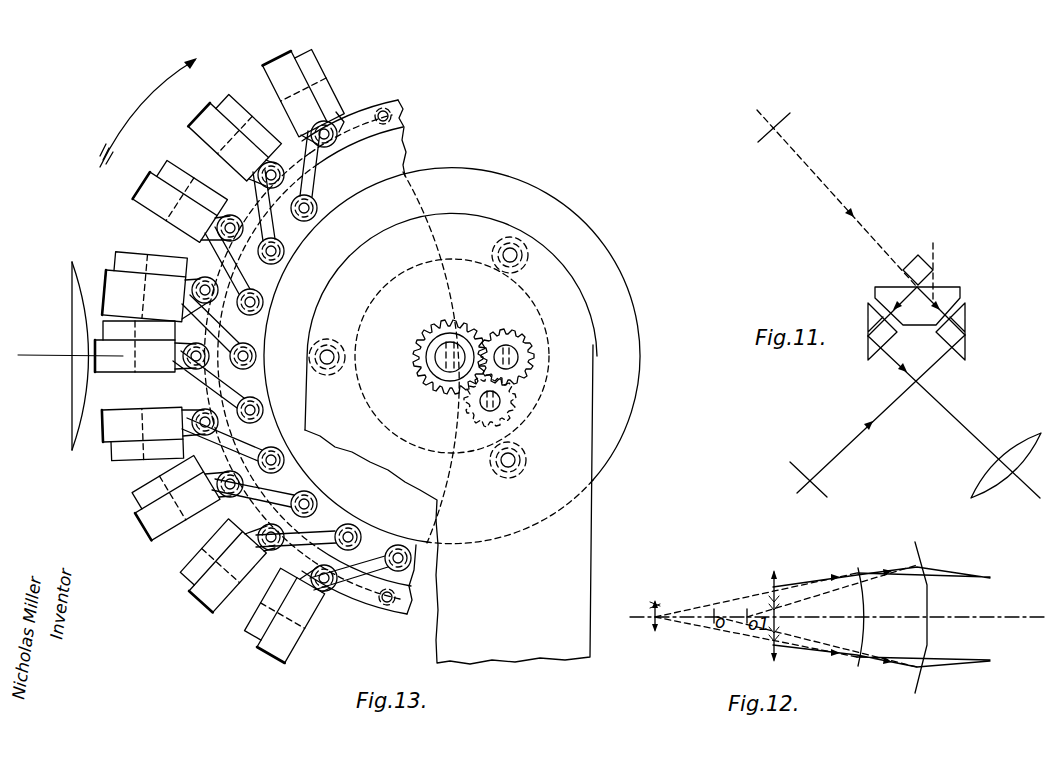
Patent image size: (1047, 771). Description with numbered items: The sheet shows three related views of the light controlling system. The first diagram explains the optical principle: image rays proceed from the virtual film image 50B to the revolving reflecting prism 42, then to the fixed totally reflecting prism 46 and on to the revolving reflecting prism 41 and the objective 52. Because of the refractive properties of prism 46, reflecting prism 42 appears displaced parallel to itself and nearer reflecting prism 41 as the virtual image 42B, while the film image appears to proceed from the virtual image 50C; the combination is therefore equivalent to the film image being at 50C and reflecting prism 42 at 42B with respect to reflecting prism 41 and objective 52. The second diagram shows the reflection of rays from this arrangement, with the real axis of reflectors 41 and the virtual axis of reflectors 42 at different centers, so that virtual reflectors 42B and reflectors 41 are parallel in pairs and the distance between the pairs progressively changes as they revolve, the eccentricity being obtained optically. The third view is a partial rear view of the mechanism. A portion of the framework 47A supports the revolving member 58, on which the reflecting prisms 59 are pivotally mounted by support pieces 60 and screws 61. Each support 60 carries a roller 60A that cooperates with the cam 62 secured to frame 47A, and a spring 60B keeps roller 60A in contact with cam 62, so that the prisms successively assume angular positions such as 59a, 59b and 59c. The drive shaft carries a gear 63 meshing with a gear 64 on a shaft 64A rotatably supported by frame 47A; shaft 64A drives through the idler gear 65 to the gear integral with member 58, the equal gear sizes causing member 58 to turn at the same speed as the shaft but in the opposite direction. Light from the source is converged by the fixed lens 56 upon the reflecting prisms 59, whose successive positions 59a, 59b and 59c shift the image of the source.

In FIG. 11, the reflecting prism 41 is at (868, 319).
In FIG. 12, the reflecting prism 41 is at (866, 614).
In FIG. 11, the reflecting prism 42 is at (967, 319).
In FIG. 11, the virtual image of reflecting prism 42B is at (934, 255).
In FIG. 12, the virtual image of reflecting prism 42B is at (929, 606).
In FIG. 11, the fixed reflecting prism 46 is at (947, 292).
In FIG. 13, the frame 47A is at (586, 544).
In FIG. 11, the virtual image of the film image 50B is at (808, 484).
In FIG. 11, the virtual image of 50B 50C is at (781, 117).
In FIG. 12, the virtual image of 50B 50C is at (773, 622).
In FIG. 11, the objective 52 is at (996, 484).
In FIG. 13, the fixed lens 56 is at (76, 421).
In FIG. 13, the revolving member 58 is at (396, 153).
In FIG. 13, the reflecting prisms 59 is at (235, 80).
In FIG. 13, the angular position of light controlling reflector 59a is at (108, 460).
In FIG. 13, the angular position of light controlling reflector 59b is at (110, 382).
In FIG. 13, the angular position of light controlling reflector 59c is at (122, 259).
In FIG. 13, the support piece 60 is at (160, 187).
In FIG. 13, the roller 60A is at (312, 220).
In FIG. 13, the spring 60B is at (348, 140).
In FIG. 13, the screw 61 is at (340, 118).
In FIG. 13, the cam 62 is at (473, 175).
In FIG. 13, the gear 63 is at (432, 324).
In FIG. 13, the gear 64 is at (516, 330).
In FIG. 13, the shaft 64A is at (518, 360).
In FIG. 13, the idler gear 65 is at (505, 420).